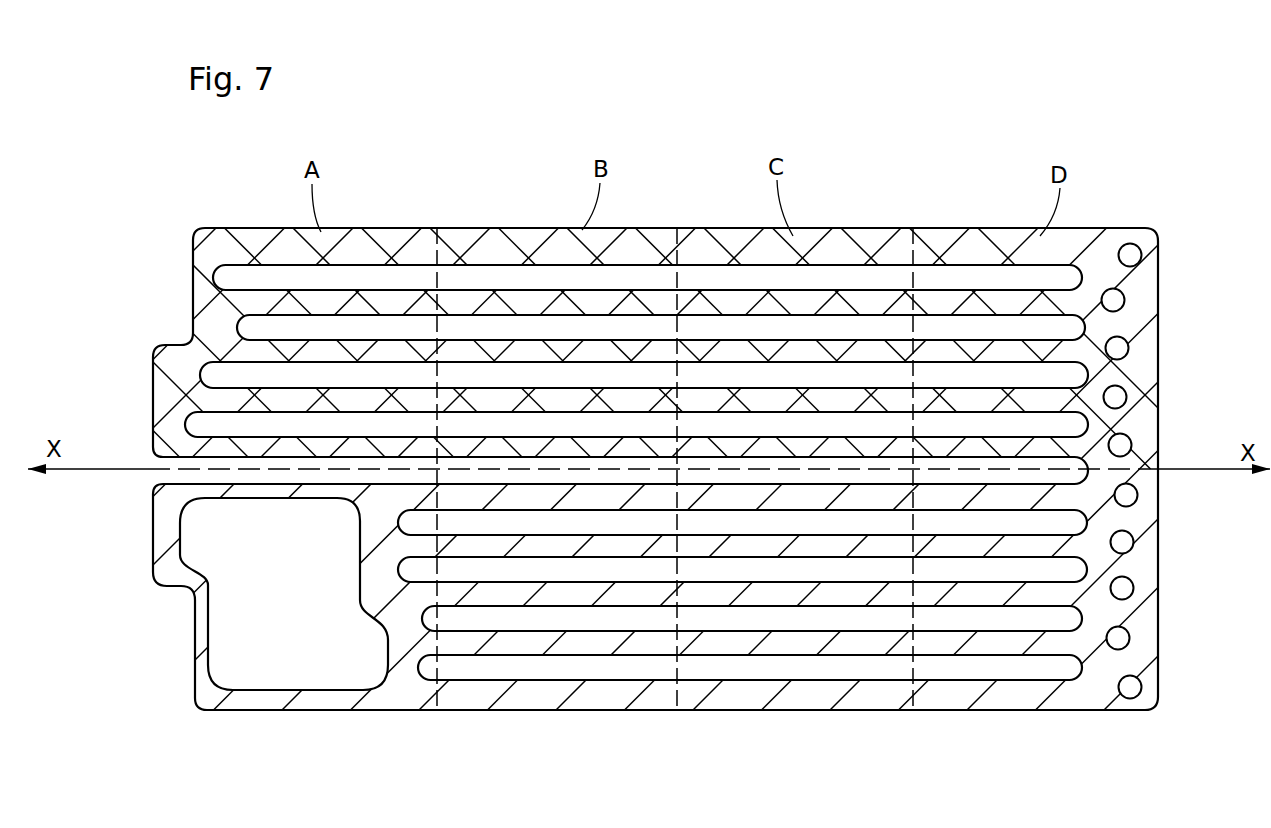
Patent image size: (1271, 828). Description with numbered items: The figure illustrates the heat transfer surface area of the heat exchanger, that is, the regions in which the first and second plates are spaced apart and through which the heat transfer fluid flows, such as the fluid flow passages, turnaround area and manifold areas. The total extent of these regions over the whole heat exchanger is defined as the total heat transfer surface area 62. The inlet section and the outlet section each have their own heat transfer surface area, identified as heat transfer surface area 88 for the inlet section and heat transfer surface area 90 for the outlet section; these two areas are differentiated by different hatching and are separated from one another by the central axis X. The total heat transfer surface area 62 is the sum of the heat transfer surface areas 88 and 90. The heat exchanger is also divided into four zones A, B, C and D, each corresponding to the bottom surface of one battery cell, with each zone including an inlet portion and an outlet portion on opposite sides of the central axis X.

The total heat transfer surface area 62 is at (985, 195).
The heat transfer surface area of the inlet section 88 is at (406, 606).
The heat transfer surface area of the outlet section 90 is at (390, 303).